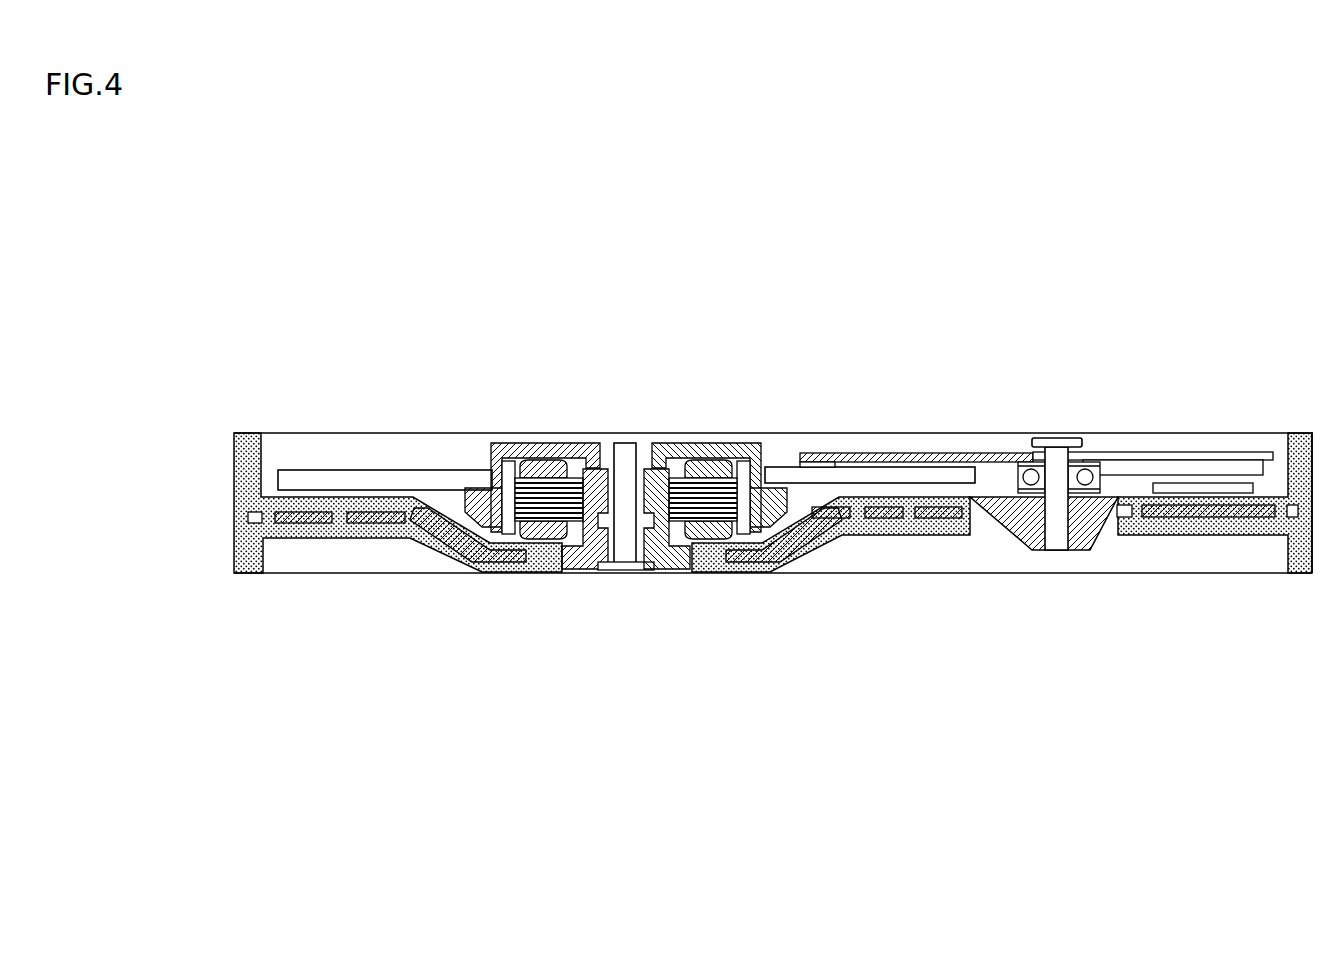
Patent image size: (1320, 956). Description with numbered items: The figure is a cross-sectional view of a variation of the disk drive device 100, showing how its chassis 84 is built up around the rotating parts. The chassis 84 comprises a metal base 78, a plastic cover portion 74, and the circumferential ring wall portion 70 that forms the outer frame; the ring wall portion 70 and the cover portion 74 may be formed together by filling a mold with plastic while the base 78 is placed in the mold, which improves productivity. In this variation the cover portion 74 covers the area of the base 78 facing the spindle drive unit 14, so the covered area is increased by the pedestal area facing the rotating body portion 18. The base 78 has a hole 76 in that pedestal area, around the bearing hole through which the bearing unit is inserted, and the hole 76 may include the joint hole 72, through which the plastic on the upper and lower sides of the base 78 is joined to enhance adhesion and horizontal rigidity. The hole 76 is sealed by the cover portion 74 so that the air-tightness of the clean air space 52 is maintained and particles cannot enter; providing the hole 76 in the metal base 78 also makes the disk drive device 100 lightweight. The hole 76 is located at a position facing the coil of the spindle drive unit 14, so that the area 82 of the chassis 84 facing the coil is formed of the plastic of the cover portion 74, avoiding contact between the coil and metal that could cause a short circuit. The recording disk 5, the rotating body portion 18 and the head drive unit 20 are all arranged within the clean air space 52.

The disk drive device 100 is at (720, 733).
The circumferential ring wall portion 70 is at (234, 444).
The joint hole 72 is at (862, 522).
The cover portion 74 is at (342, 540).
The hole 76 is at (553, 562).
The base 78 is at (1011, 542).
The area of the chassis facing the coil 82 is at (718, 562).
The chassis 84 is at (1242, 545).
The recording disk 5 is at (445, 470).
The spindle drive unit 14 is at (546, 418).
The rotating body portion 18 is at (718, 420).
The head drive unit 20 is at (1055, 413).
The clean air space 52 is at (313, 458).